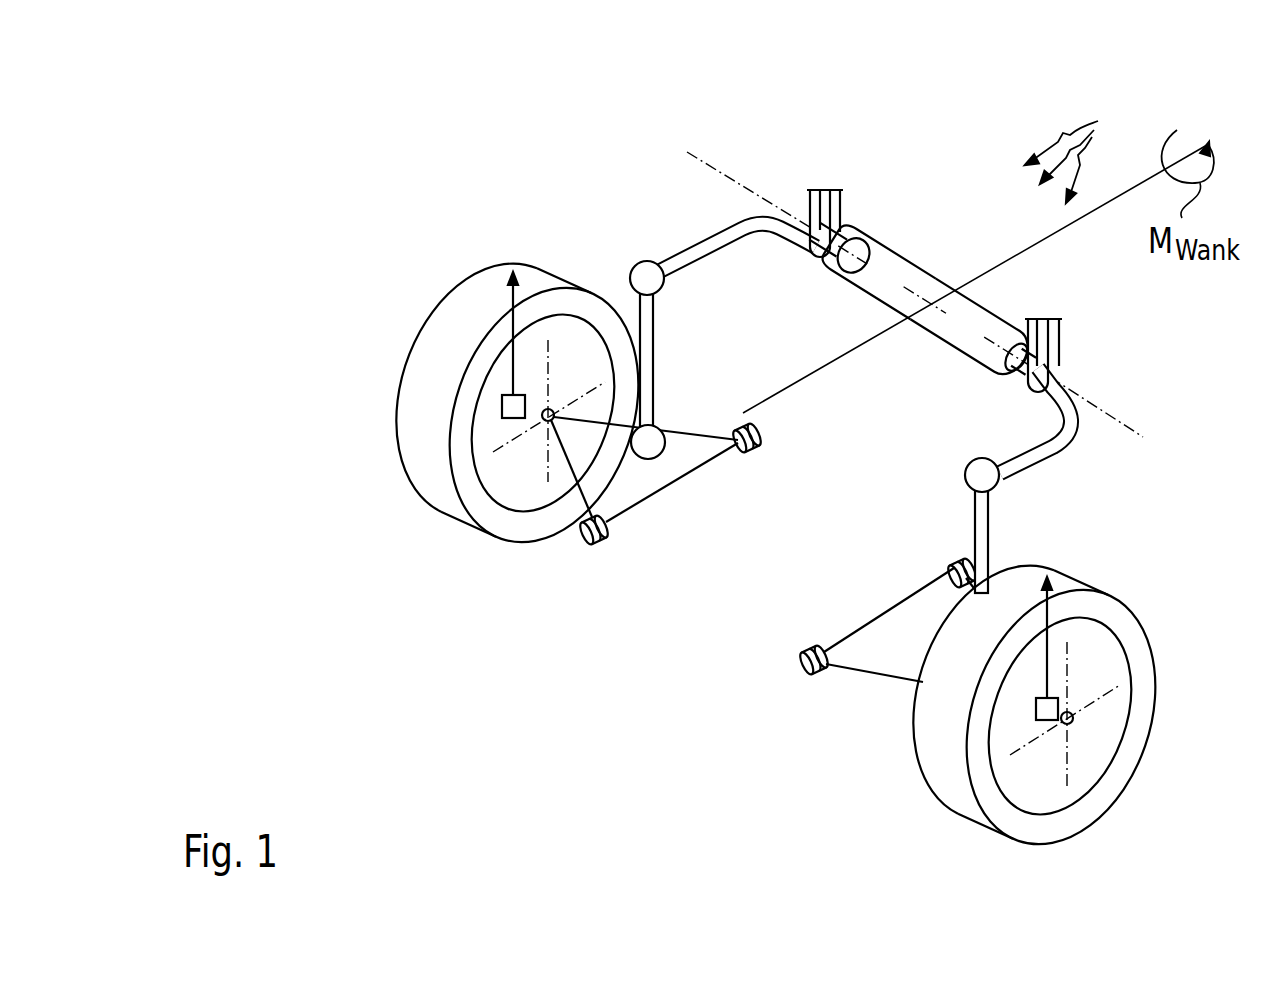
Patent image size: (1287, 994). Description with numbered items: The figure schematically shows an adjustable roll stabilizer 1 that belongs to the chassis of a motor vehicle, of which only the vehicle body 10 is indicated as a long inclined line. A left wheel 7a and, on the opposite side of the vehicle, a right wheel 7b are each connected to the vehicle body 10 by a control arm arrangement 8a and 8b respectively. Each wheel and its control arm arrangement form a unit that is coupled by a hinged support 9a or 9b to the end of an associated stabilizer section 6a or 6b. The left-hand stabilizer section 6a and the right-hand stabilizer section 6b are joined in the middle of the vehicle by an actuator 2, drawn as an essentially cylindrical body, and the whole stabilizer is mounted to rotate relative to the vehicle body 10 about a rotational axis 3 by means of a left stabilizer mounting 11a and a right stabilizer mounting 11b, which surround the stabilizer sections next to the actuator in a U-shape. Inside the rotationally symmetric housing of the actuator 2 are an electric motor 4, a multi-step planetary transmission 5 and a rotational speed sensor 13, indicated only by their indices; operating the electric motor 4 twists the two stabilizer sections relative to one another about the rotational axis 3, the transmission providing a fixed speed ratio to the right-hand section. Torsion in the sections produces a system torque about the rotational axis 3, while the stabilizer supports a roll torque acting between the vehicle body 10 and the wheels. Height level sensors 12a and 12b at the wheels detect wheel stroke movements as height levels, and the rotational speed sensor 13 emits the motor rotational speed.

The adjustable roll stabilizer 1 is at (1071, 151).
The actuator 2 is at (924, 252).
The rotational axis 3 is at (1097, 405).
The electric motor 4 is at (898, 297).
The multi-step planetary transmission 5 is at (979, 344).
The left-hand stabilizer section 6a is at (773, 225).
The right-hand stabilizer section 6b is at (1027, 452).
The left wheel 7a is at (443, 497).
The right wheel 7b is at (1092, 795).
The left control arm arrangement 8a is at (660, 477).
The right control arm arrangement 8b is at (870, 653).
The left hinged support 9a is at (645, 355).
The right hinged support 9b is at (980, 527).
The vehicle body 10 is at (883, 433).
The left stabilizer mounting 11a is at (837, 203).
The right stabilizer mounting 11b is at (1060, 343).
The left height level sensor 12a is at (502, 403).
The right height level sensor 12b is at (1057, 707).
The rotational speed sensor 13 is at (863, 232).